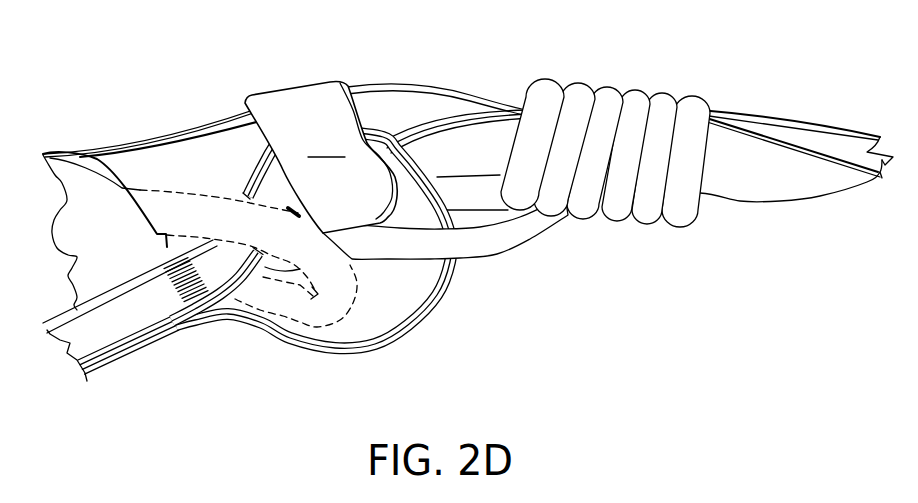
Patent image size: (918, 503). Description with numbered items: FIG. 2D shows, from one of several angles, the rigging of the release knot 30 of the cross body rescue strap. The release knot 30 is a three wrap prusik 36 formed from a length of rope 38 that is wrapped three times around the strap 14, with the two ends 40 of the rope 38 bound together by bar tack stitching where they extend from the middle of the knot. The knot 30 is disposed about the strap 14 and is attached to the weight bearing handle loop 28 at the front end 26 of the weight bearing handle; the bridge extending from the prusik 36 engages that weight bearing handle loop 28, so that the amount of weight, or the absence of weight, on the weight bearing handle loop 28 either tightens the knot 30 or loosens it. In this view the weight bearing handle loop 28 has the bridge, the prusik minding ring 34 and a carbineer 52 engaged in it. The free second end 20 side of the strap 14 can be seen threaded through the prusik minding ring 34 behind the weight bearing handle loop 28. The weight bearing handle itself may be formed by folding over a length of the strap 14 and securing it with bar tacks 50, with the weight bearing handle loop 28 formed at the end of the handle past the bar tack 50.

The strap 14 is at (848, 118).
The free second end 20 is at (165, 140).
The front end 26 is at (205, 328).
The weight bearing handle loop 28 is at (400, 332).
The release knot 30 is at (683, 33).
The prusik minding ring 34 is at (321, 158).
The three wrap prusik 36 is at (595, 80).
The rope 38 is at (647, 224).
The ends 40 is at (503, 256).
The bar tacks 50 is at (167, 287).
The carbineer 52 is at (300, 310).